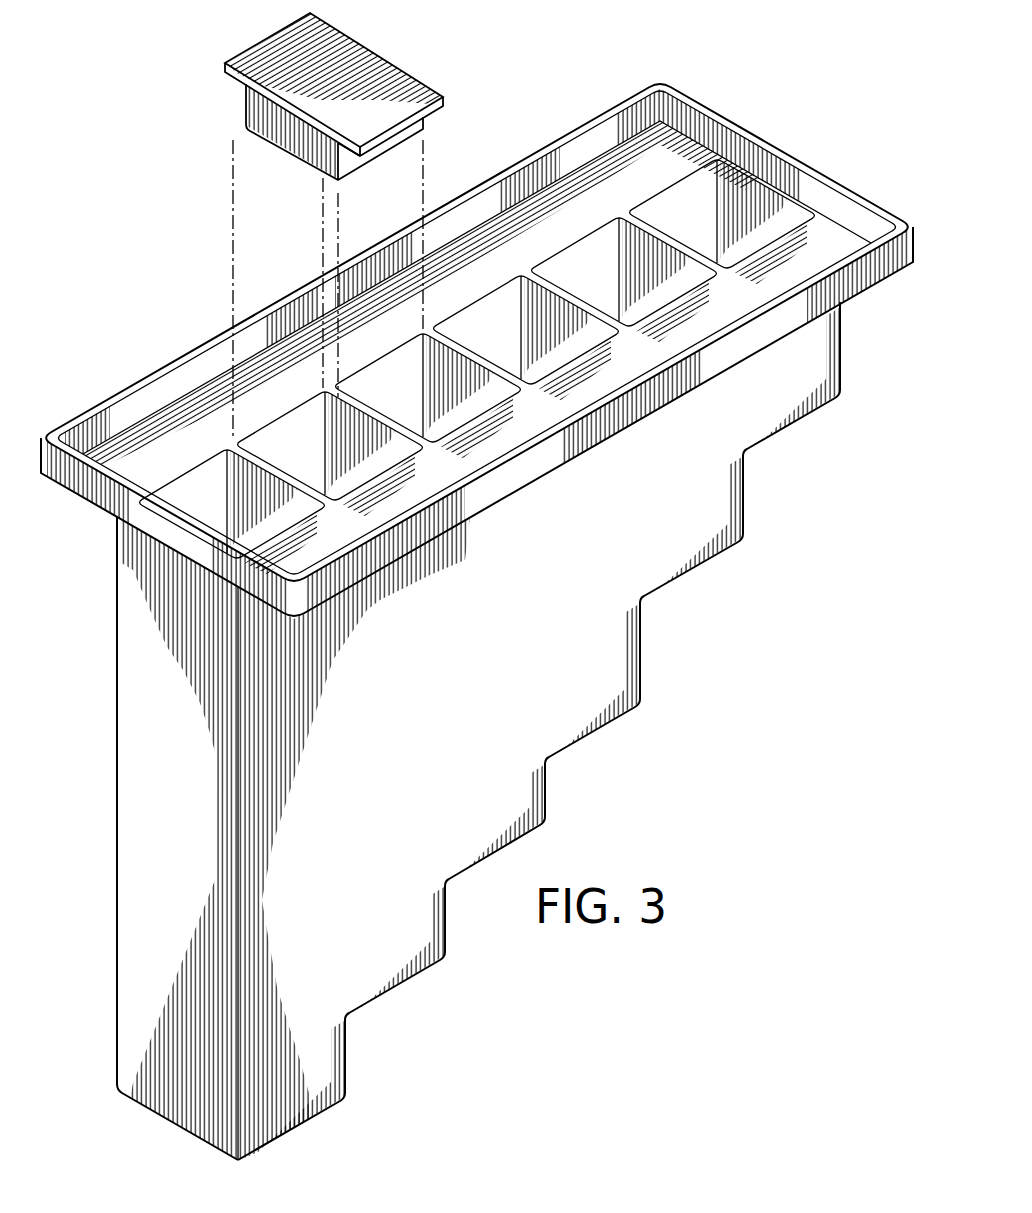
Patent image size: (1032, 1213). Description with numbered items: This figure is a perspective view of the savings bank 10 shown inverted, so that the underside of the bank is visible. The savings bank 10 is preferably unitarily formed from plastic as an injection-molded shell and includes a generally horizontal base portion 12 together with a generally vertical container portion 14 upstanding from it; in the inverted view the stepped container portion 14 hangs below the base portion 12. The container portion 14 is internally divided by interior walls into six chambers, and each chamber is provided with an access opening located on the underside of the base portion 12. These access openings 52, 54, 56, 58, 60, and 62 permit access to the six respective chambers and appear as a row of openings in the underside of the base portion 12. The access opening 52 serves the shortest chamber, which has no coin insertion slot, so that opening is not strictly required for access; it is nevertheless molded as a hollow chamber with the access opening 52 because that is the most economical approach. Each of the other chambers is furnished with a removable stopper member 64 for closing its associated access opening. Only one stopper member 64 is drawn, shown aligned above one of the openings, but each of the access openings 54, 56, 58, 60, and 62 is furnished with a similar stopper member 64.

The savings bank 10 is at (718, 611).
The base portion 12 is at (826, 99).
The container portion 14 is at (636, 761).
The access opening 52 is at (722, 222).
The access opening 54 is at (624, 280).
The access opening 56 is at (526, 338).
The access opening 58 is at (428, 396).
The access opening 60 is at (330, 454).
The access opening 62 is at (232, 512).
The stopper member 64 is at (360, 58).